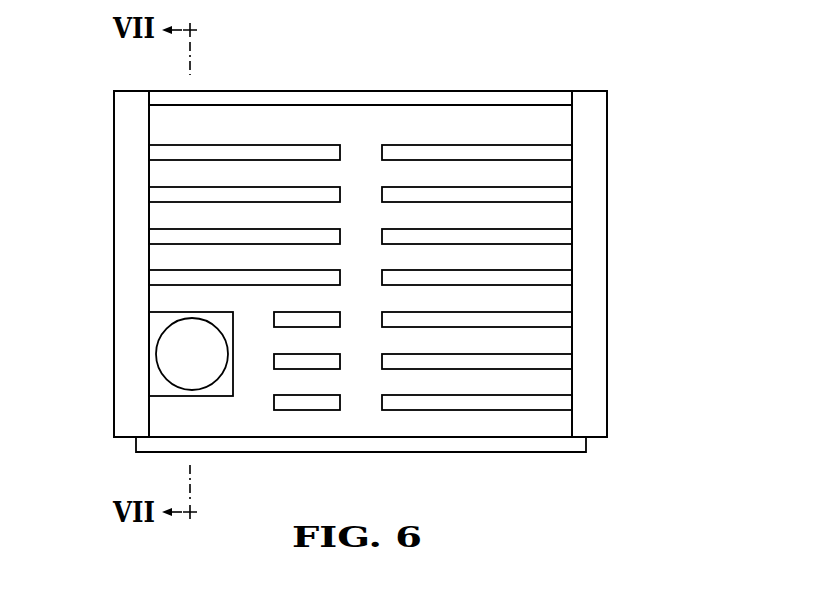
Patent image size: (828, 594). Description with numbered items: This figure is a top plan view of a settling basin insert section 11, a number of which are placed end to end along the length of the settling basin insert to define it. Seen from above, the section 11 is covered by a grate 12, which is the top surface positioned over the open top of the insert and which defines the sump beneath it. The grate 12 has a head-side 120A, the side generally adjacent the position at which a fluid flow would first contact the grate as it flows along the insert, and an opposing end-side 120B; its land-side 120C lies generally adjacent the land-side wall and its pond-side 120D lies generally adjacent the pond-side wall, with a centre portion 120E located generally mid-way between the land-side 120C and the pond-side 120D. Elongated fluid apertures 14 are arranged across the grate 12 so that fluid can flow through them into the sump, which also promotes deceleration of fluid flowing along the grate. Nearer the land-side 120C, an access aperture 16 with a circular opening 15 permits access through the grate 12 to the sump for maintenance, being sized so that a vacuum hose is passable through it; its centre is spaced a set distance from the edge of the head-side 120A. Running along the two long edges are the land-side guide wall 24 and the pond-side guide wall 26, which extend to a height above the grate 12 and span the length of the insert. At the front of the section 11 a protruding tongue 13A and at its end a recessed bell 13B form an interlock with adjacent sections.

The settling basin insert section 11 is at (686, 148).
The grate 12 is at (485, 120).
The protruding tongue 13A is at (538, 442).
The recessed bell 13B is at (538, 95).
The fluid apertures 14 is at (222, 152).
The speaker opening 15 is at (188, 368).
The access aperture 16 is at (175, 352).
The land-side guide wall 24 is at (134, 227).
The pond-side guide wall 26 is at (588, 233).
The head-side 120A is at (468, 423).
The end-side 120B is at (398, 123).
The land-side 120C is at (157, 258).
The pond-side 120D is at (573, 257).
The centre portion 120E is at (360, 193).